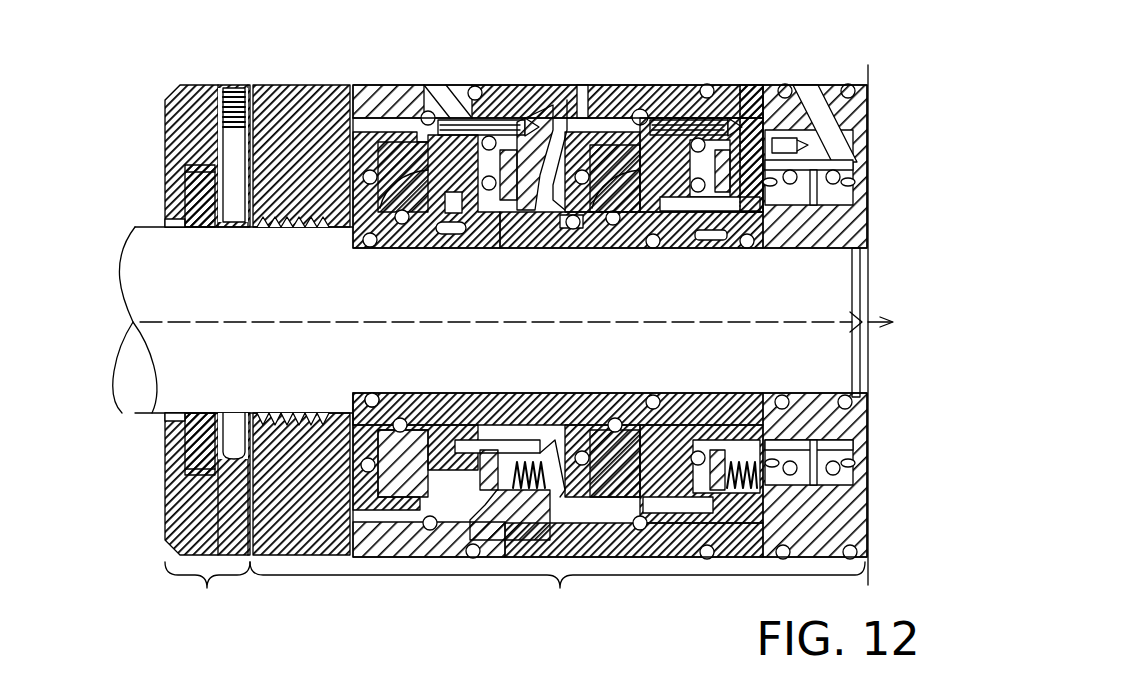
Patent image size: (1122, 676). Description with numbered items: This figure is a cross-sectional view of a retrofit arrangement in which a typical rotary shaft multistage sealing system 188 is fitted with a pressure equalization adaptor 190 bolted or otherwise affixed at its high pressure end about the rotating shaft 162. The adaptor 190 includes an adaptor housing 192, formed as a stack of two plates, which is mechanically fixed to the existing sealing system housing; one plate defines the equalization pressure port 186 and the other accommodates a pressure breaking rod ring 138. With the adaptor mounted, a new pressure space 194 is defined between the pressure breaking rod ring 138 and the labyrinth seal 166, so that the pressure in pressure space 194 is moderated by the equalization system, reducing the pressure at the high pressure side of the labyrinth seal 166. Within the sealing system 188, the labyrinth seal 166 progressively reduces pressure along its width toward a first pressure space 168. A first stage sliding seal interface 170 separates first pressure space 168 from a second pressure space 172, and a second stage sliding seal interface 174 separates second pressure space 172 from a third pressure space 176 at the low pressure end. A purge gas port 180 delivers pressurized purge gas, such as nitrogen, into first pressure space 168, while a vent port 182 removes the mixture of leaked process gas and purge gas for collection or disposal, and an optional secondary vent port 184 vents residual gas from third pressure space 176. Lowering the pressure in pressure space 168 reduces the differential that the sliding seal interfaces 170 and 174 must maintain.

The pressure breaking rod ring 138 is at (183, 178).
The rotating shaft 162 is at (125, 335).
The labyrinth seal 166 is at (300, 228).
The first pressure space 168 is at (352, 402).
The first stage sliding seal interface 170 is at (382, 248).
The second pressure space 172 is at (540, 248).
The second stage sliding seal interface 174 is at (608, 247).
The third pressure space 176 is at (672, 248).
The purge gas port 180 is at (431, 85).
The vent port 182 is at (585, 85).
The secondary vent port 184 is at (748, 85).
The equalization pressure port 186 is at (233, 85).
The rotary shaft multistage sealing system 188 is at (558, 524).
The pressure equalization adaptor 190 is at (207, 608).
The adaptor housing 192 is at (165, 505).
The new pressure space 194 is at (232, 228).